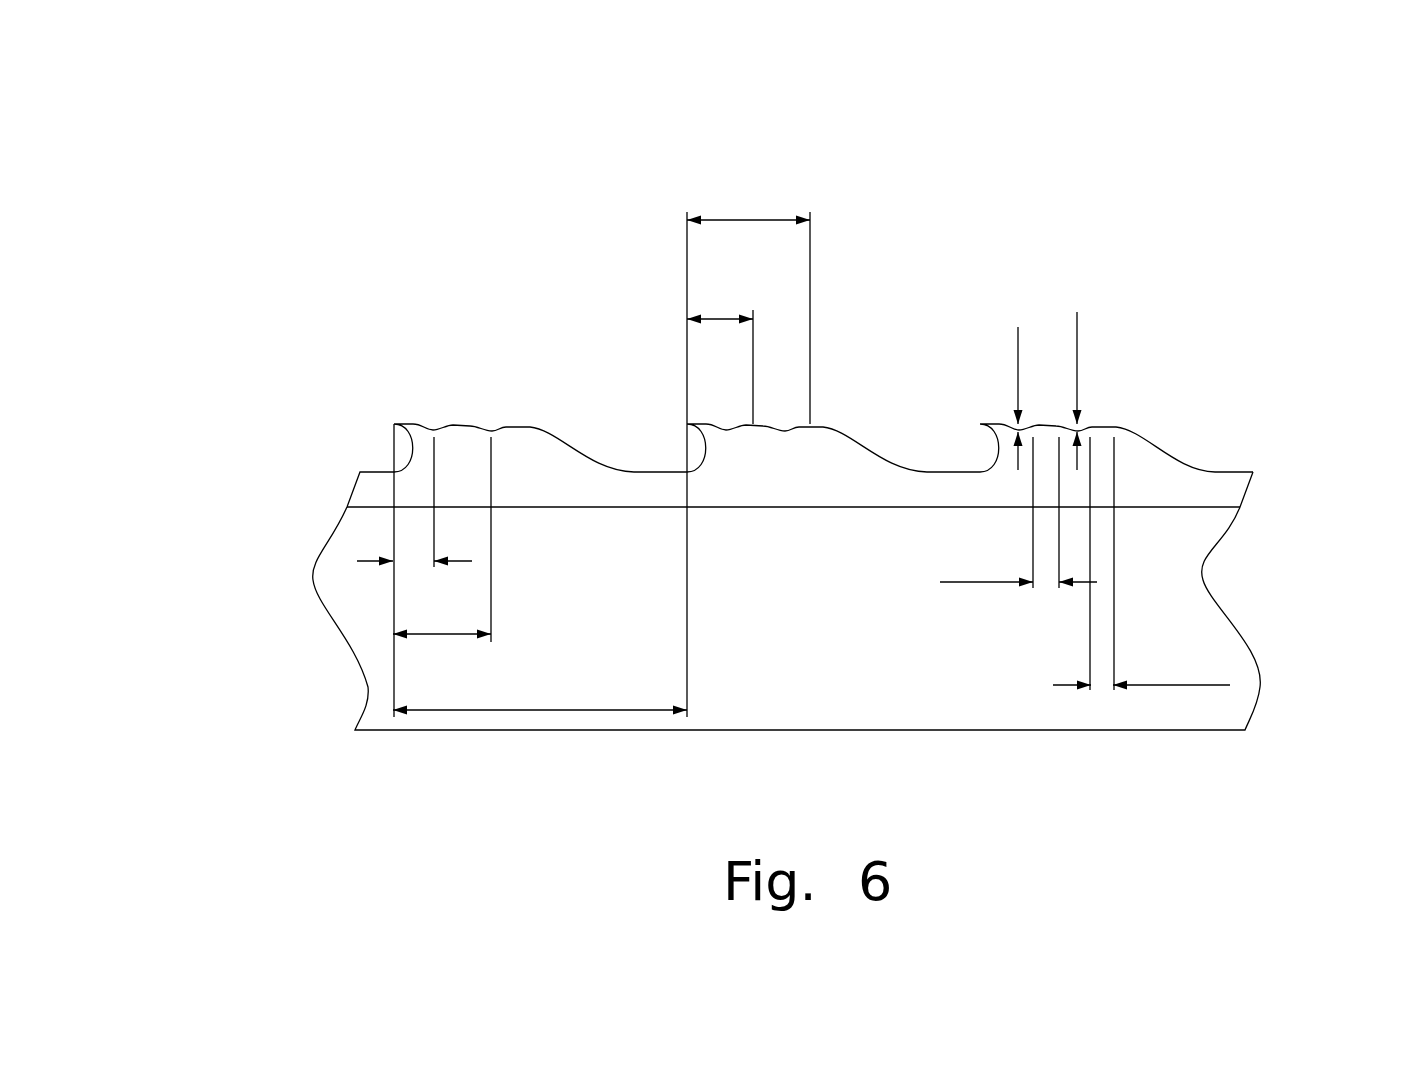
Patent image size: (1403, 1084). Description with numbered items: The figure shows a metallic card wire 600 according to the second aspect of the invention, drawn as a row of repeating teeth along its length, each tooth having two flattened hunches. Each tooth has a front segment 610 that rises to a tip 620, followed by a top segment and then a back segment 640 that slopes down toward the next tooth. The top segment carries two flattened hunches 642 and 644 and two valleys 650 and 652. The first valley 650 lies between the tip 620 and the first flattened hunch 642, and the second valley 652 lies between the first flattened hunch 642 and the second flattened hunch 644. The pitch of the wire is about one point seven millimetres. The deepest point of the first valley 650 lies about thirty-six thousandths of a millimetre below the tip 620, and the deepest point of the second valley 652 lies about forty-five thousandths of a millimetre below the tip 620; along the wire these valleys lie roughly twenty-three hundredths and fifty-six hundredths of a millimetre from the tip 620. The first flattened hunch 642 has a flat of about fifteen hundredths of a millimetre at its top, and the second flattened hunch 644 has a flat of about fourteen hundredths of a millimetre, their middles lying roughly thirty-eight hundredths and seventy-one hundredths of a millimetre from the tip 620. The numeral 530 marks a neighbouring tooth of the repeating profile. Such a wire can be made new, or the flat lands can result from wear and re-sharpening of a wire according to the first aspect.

The card wire 600 is at (1262, 178).
The front segment 610 is at (370, 451).
The tip 620 is at (393, 424).
The first valley 650 is at (430, 428).
The first flattened hunch 642 is at (460, 427).
The second valley 652 is at (492, 430).
The second flattened hunch 644 is at (517, 427).
The pattern segment 530 is at (812, 313).
The back segment 640 is at (922, 452).